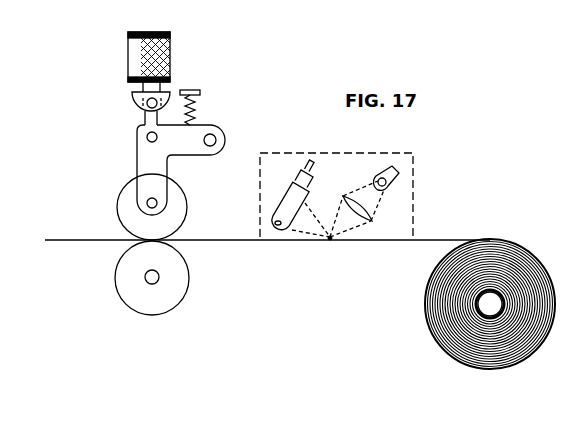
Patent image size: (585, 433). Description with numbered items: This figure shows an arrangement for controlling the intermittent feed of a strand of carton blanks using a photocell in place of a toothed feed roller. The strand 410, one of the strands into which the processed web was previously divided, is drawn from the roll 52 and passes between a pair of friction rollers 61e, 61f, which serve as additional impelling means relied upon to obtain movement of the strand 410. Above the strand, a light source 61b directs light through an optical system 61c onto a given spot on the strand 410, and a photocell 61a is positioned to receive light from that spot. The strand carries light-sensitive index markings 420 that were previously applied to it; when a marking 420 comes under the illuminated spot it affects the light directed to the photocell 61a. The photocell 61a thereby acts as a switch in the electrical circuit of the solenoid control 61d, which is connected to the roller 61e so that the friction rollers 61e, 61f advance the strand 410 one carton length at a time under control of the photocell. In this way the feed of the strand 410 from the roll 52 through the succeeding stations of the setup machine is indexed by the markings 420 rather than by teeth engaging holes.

The solenoid control 61d is at (170, 55).
The friction roller 61e is at (182, 197).
The friction roller 61f is at (120, 297).
The strand of carton blanks 410 is at (66, 238).
The photocell 61a is at (298, 185).
The light source 61b is at (383, 177).
The optical system 61c is at (373, 218).
The marking 420 is at (331, 242).
The roll 52 is at (428, 314).